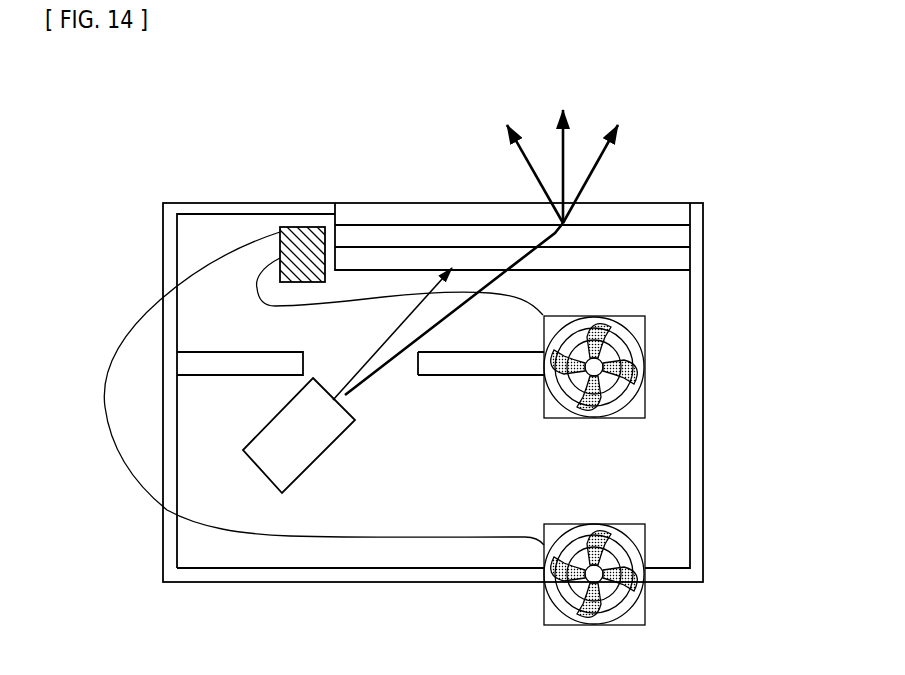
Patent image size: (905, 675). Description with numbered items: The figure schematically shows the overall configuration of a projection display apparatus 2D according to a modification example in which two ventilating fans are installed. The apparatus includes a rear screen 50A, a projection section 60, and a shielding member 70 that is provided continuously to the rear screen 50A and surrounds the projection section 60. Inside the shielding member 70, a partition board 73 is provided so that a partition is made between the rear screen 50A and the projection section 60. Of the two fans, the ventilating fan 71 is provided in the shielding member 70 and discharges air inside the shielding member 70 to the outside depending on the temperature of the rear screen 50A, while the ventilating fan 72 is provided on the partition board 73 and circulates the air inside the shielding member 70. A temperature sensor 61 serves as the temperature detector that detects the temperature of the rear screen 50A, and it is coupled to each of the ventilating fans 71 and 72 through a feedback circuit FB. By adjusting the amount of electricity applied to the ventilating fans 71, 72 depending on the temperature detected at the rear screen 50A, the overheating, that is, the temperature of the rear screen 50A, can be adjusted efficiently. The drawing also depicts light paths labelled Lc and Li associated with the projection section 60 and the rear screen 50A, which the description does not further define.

The rear screen 50A is at (492, 353).
The shielding member 70 is at (703, 445).
The ventilating fan 71 is at (645, 548).
The ventilating fan 72 is at (645, 328).
The partition board 73 is at (668, 362).
The temperature sensor 61 is at (280, 232).
The projection section 60 is at (320, 456).
The feedback circuit FB is at (155, 307).
The light Lc is at (388, 342).
The incident light Li is at (455, 310).
The projection display apparatus 2D is at (653, 110).